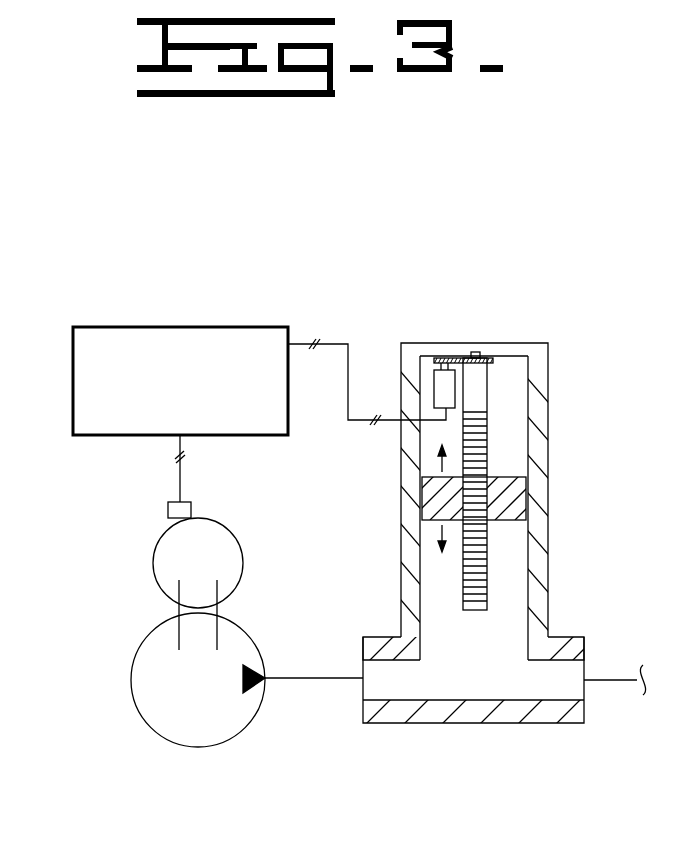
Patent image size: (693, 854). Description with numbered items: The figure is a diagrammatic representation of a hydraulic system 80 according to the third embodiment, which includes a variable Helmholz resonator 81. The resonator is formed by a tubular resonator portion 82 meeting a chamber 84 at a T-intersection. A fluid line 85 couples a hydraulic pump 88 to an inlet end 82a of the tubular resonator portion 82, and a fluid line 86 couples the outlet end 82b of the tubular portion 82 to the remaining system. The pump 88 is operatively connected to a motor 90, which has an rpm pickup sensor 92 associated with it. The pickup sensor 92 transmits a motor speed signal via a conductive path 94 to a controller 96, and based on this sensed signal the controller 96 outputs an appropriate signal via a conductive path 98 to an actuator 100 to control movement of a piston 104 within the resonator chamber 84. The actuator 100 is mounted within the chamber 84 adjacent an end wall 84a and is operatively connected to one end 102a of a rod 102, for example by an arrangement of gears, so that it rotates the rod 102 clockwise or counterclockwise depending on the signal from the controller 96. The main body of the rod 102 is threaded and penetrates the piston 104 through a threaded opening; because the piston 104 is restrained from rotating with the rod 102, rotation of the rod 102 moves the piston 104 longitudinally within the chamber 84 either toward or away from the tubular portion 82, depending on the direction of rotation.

The hydraulic system 80 is at (298, 247).
The variable Helmholz resonator 81 is at (588, 592).
The tubular resonator portion 82 is at (477, 723).
The inlet end 82a is at (362, 710).
The outlet end 82b is at (583, 713).
The chamber 84 is at (507, 438).
The end wall 84a is at (503, 350).
The fluid line 85 is at (323, 678).
The fluid line 86 is at (620, 680).
The hydraulic pump 88 is at (160, 710).
The motor 90 is at (227, 540).
The rpm pickup sensor 92 is at (167, 513).
The conductive path 94 is at (182, 482).
The controller 96 is at (245, 340).
The conductive path 98 is at (350, 423).
The actuator 100 is at (442, 385).
The rod 102 is at (487, 570).
The end of rod 102a is at (487, 377).
The piston 104 is at (518, 488).